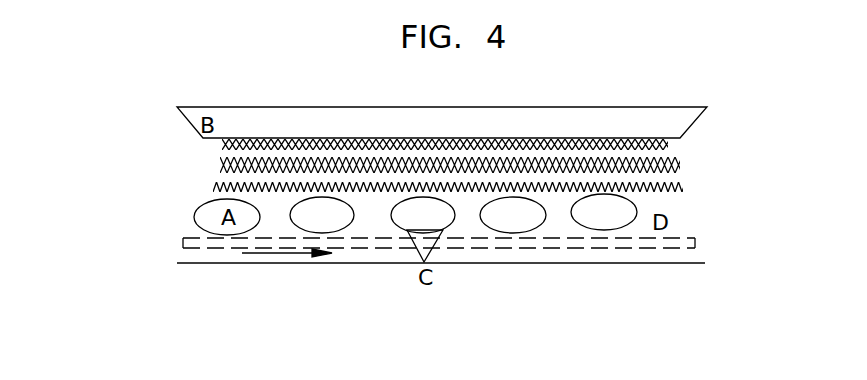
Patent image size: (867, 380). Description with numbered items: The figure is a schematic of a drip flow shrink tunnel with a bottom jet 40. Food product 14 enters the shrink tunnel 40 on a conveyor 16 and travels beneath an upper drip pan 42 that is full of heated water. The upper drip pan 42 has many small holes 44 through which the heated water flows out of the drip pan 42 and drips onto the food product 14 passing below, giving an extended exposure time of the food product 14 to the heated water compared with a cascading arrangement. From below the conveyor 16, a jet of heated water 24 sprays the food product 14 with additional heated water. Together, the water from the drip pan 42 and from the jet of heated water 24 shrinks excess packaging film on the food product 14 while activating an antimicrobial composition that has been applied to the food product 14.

The drip flow shrink tunnel with a bottom jet 40 is at (105, 194).
The upper drip pan 42 is at (190, 116).
The small holes 44 is at (218, 140).
The food product 14 is at (204, 219).
The conveyor 16 is at (535, 239).
The jet of heated water 24 is at (438, 270).